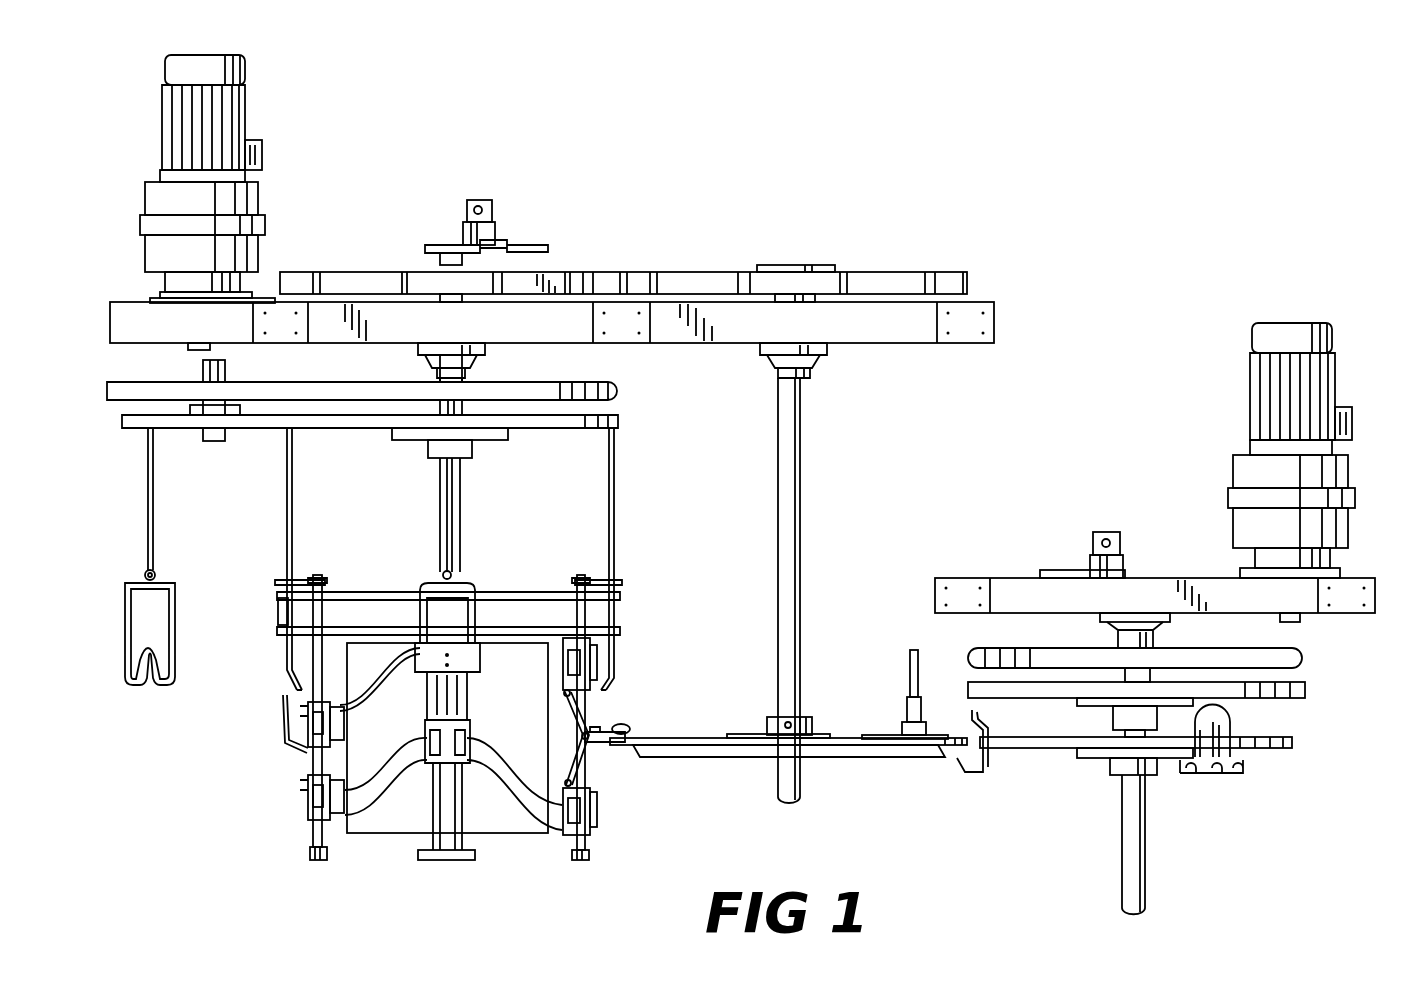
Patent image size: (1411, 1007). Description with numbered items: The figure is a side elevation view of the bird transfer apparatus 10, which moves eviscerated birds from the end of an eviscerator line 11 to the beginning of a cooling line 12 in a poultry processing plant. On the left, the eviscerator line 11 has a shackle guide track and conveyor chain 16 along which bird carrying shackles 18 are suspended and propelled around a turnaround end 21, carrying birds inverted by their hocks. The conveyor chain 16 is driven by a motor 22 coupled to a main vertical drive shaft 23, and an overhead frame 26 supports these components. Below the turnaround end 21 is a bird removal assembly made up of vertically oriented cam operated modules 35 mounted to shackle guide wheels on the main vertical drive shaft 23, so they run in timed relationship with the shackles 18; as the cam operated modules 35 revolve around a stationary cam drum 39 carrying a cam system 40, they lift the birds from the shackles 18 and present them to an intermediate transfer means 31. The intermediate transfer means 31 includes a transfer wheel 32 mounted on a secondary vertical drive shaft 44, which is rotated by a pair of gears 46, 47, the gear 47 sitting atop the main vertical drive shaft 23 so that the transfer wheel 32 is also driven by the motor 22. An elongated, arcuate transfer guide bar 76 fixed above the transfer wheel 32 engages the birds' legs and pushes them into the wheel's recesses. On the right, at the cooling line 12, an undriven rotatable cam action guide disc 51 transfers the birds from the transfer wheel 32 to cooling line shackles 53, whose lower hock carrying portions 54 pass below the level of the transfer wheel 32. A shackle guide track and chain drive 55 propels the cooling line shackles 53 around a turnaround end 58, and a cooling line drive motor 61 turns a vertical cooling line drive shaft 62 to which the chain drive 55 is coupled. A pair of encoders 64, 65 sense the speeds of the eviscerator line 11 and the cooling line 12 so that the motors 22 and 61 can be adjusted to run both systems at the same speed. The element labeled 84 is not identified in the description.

The bird transfer apparatus 10 is at (787, 248).
The eviscerator line 11 is at (283, 438).
The cooling line 12 is at (1015, 573).
The shackle guide track and conveyor chain 16 is at (406, 436).
The bird carrying shackles 18 is at (612, 530).
The turnaround end 21 is at (625, 392).
The motor 22 is at (245, 128).
The main vertical drive shaft 23 is at (460, 525).
The overhead frame 26 is at (900, 330).
The intermediate transfer means 31 is at (707, 737).
The transfer wheel 32 is at (668, 738).
The cam operated modules 35 is at (278, 743).
The stationary cam drum 39 is at (410, 812).
The cam system 40 is at (488, 675).
The secondary vertical drive shaft 44 is at (802, 522).
The gear 46 is at (690, 283).
The gear 47 is at (565, 277).
The cam action guide disc 51 is at (903, 732).
The cooling line shackles 53 is at (1235, 710).
The lower hock carrying portions 54 is at (965, 757).
The shackle guide track and chain drive 55 is at (1305, 690).
The turnaround end 58 is at (962, 638).
The cooling line drive motor 61 is at (1250, 390).
The vertical cooling line drive shaft 62 is at (1145, 853).
The encoder 64 is at (490, 232).
The encoder 65 is at (1120, 545).
The arcuate transfer guide bar 76 is at (621, 724).
The block 84 is at (276, 614).